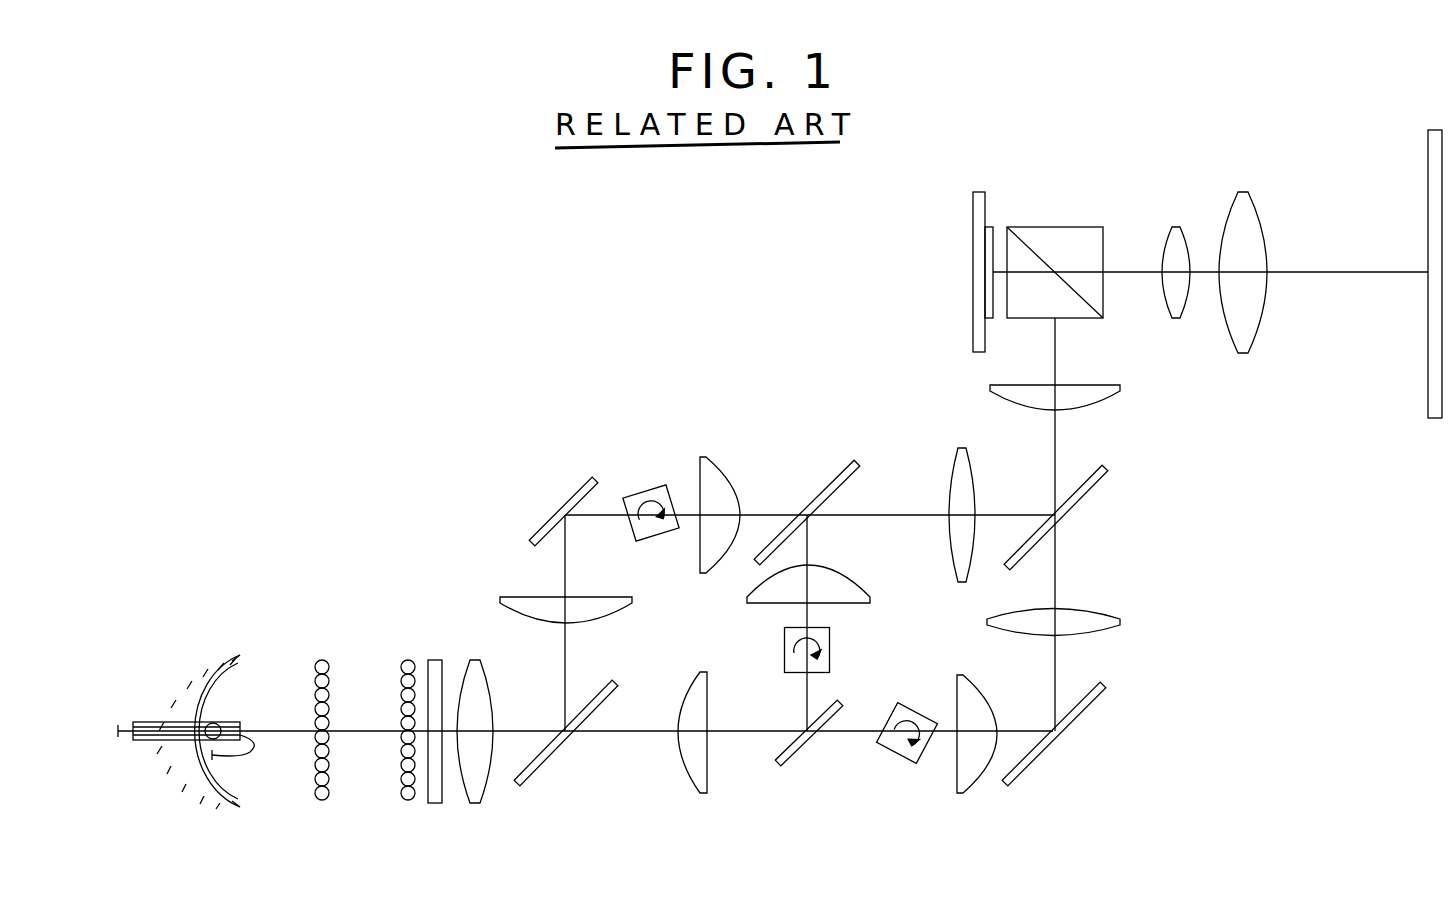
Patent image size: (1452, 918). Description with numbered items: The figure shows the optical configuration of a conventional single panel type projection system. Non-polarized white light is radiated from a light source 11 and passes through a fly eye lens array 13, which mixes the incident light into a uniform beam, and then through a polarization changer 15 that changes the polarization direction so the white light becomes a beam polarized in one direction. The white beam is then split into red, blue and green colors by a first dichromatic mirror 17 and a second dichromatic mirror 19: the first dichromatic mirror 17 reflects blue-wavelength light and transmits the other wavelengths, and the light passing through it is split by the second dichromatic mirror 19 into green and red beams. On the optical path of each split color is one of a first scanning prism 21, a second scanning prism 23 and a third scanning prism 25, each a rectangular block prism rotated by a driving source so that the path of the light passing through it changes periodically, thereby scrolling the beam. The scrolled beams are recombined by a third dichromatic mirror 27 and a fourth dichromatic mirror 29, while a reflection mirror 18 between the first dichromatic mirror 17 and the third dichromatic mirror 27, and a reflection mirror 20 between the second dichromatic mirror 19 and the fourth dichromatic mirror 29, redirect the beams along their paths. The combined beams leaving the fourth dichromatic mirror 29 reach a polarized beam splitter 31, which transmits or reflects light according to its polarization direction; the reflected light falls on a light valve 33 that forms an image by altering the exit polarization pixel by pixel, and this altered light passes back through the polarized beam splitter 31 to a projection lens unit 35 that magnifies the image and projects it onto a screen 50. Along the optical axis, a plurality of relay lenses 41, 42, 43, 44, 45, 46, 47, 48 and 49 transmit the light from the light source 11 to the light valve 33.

The light source 11 is at (190, 640).
The fly eye lens array 13 is at (322, 808).
The polarization changer 15 is at (436, 804).
The relay lens 41 is at (473, 806).
The first dichromatic mirror 17 is at (530, 778).
The relay lens 42 is at (702, 793).
The second dichromatic mirror 19 is at (793, 755).
The third scanning prism 25 is at (903, 763).
The relay lens 49 is at (963, 790).
The reflection mirror 20 is at (1012, 782).
The reflection mirror 18 is at (540, 528).
The first scanning prism 21 is at (650, 488).
The relay lens 44 is at (708, 465).
The third dichromatic mirror 27 is at (836, 480).
The relay lens 43 is at (500, 600).
The relay lens 45 is at (870, 600).
The second scanning prism 23 is at (830, 650).
The relay lens 46 is at (962, 450).
The relay lens 47 is at (1113, 621).
The fourth dichromatic mirror 29 is at (1093, 485).
The relay lens 48 is at (1115, 390).
The light valve 33 is at (978, 192).
The polarized beam splitter 31 is at (1056, 227).
The projection lens unit 35 is at (1170, 175).
The screen 50 is at (1430, 135).